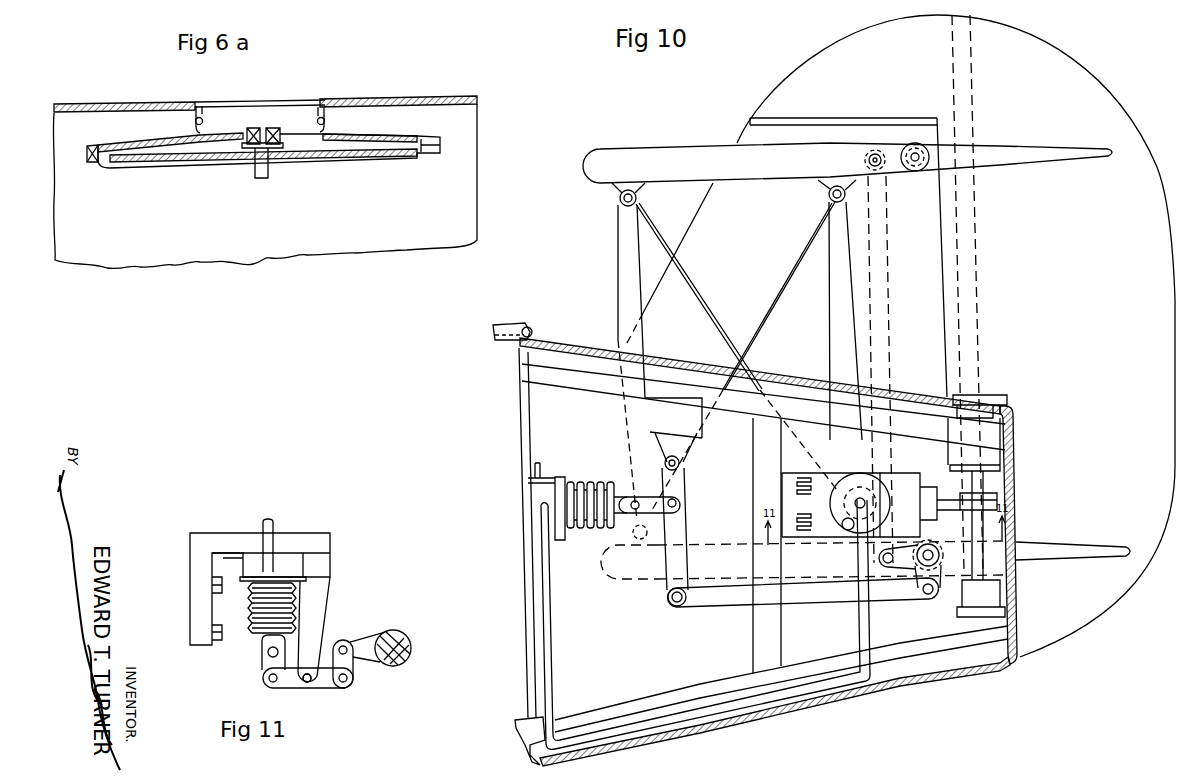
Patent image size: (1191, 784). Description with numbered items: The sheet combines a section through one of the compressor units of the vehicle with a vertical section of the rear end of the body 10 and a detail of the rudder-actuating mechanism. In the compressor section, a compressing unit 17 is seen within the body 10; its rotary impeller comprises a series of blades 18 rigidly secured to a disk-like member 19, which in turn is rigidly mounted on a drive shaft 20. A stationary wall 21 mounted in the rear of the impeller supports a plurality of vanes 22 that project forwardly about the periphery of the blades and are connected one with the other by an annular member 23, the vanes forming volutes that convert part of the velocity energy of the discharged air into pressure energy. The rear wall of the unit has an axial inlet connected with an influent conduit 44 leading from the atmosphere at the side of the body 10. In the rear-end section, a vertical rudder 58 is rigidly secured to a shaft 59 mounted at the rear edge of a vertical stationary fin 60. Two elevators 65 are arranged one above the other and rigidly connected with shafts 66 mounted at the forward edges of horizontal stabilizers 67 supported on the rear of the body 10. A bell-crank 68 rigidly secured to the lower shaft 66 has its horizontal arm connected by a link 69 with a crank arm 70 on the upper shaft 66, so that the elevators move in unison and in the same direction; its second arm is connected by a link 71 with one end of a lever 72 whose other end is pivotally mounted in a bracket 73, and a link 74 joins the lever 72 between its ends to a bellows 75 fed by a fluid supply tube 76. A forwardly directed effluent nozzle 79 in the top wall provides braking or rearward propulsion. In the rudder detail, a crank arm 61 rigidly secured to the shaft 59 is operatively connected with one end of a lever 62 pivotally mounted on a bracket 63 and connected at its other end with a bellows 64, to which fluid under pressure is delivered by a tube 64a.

In FIG. 6a, the body 10 is at (361, 100).
In FIG. 10, the body 10 is at (566, 340).
In FIG. 6a, the compressing unit 17 is at (155, 175).
In FIG. 6a, the blades 18 is at (374, 144).
In FIG. 6a, the disk-like member 19 is at (365, 157).
In FIG. 6a, the drive shaft 20 is at (262, 172).
In FIG. 6a, the stationary wall 21 is at (408, 140).
In FIG. 6a, the vanes 22 is at (90, 154).
In FIG. 6a, the annular member 23 is at (106, 154).
In FIG. 6a, the influent conduit 44 is at (259, 118).
In FIG. 10, the vertical rudder 58 is at (1103, 117).
In FIG. 11, the shaft 59 is at (410, 655).
In FIG. 10, the shaft 59 is at (983, 563).
In FIG. 10, the vertical stationary fin 60 is at (750, 135).
In FIG. 11, the crank arm 61 is at (365, 640).
In FIG. 10, the crank arm 61 is at (992, 500).
In FIG. 11, the lever 62 is at (325, 683).
In FIG. 11, the bracket 63 is at (318, 605).
In FIG. 11, the bellows 64 is at (263, 622).
In FIG. 11, the tube 64a is at (268, 528).
In FIG. 10, the elevators 65 is at (1060, 157).
In FIG. 10, the shafts 66 is at (927, 155).
In FIG. 10, the horizontal stabilizers 67 is at (657, 155).
In FIG. 10, the bell-crank 68 is at (918, 572).
In FIG. 10, the link 69 is at (880, 333).
In FIG. 10, the crank arm 70 is at (895, 153).
In FIG. 10, the link 71 is at (826, 597).
In FIG. 10, the lever 72 is at (681, 533).
In FIG. 10, the bracket 73 is at (685, 460).
In FIG. 10, the link 74 is at (678, 500).
In FIG. 10, the bellows 75 is at (585, 528).
In FIG. 10, the fluid supply tube 76 is at (557, 672).
In FIG. 10, the forwardly directed effluent nozzle 79 is at (508, 322).